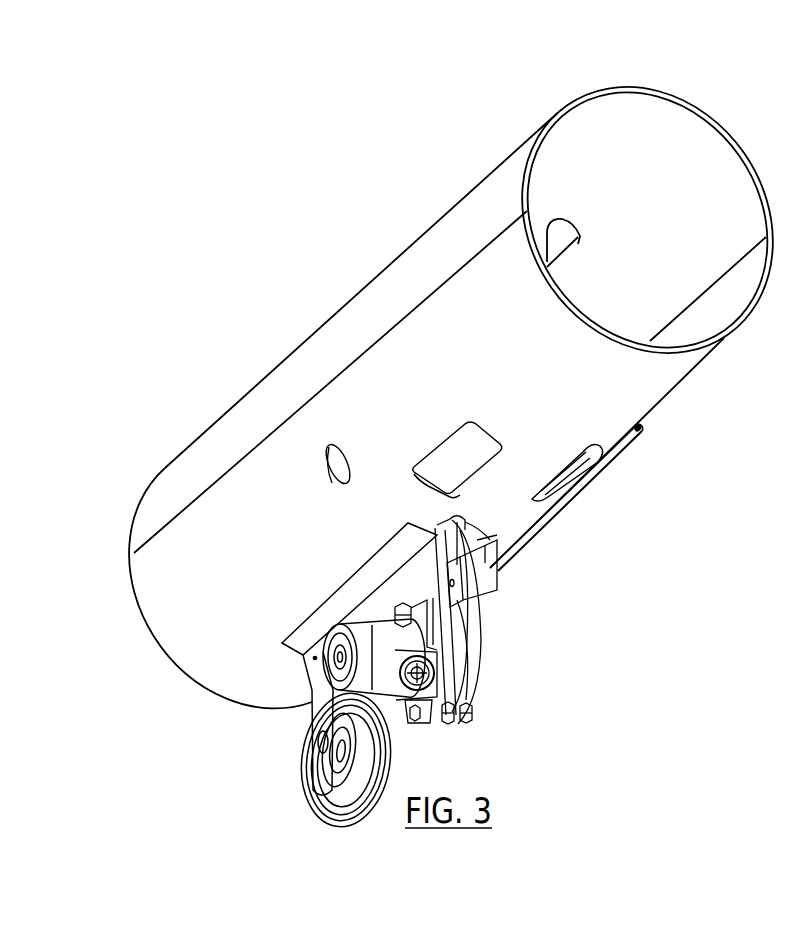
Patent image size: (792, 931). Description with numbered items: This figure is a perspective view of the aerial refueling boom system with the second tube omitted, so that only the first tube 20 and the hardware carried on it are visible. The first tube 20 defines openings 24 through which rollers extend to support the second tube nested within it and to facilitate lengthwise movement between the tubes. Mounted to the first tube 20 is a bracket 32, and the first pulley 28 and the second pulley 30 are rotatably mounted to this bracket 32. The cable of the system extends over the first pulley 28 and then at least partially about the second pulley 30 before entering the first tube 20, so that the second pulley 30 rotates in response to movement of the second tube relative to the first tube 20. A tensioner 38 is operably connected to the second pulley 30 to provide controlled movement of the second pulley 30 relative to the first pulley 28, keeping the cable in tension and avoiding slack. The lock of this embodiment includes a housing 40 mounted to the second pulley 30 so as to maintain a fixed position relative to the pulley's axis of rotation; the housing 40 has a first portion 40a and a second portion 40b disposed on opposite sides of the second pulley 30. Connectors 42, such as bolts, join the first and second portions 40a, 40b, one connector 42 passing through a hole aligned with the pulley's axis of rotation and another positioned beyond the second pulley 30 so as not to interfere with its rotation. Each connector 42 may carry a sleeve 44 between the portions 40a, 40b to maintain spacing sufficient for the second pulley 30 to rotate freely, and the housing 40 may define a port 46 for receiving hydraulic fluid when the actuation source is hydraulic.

The first tube 20 is at (698, 120).
The openings 24 is at (450, 450).
The first pulley 28 is at (307, 797).
The second pulley 30 is at (473, 638).
The bracket 32 is at (313, 678).
The tensioner 38 is at (618, 453).
The housing 40 is at (392, 612).
The first portion 40a is at (390, 686).
The second portion 40b is at (474, 680).
The connectors 42 is at (392, 615).
The sleeve 44 is at (447, 724).
The port 46 is at (401, 664).